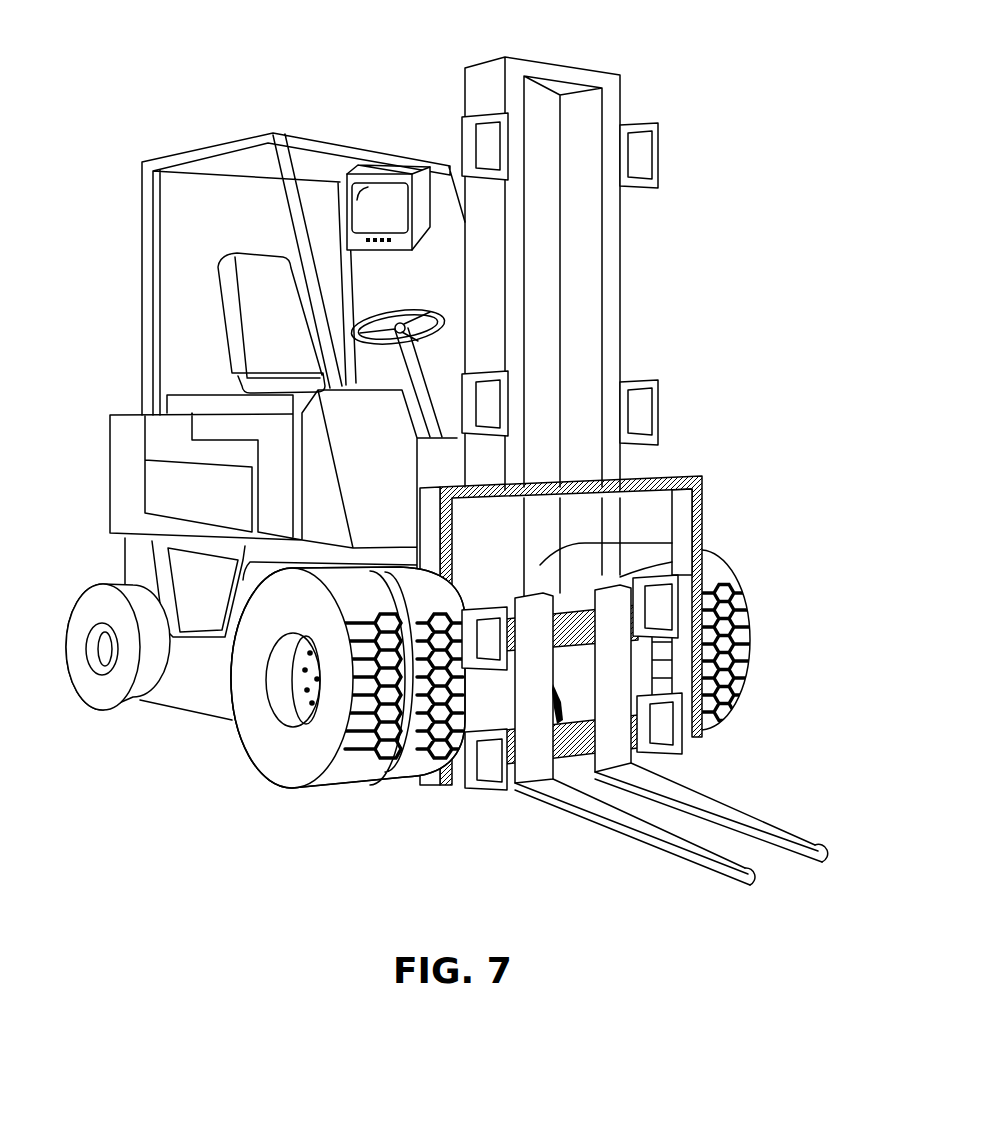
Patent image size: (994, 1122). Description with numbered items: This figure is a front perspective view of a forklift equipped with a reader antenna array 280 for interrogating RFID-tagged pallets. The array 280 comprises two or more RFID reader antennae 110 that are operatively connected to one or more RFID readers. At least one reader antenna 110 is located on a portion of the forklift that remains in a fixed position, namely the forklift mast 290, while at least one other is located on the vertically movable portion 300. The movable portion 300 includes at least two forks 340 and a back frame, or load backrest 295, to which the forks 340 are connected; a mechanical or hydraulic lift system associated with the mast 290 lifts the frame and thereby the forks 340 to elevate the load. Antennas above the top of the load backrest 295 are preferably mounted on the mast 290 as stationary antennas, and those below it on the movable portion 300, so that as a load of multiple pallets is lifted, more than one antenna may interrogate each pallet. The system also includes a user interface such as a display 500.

The reader antenna 110 is at (643, 173).
The reader antenna array 280 is at (640, 152).
The forklift mast 290 is at (128, 475).
The load backrest (back frame) 295 is at (703, 528).
The vertically movable portion 300 is at (563, 740).
The forks 340 is at (802, 848).
The display 500 is at (381, 197).